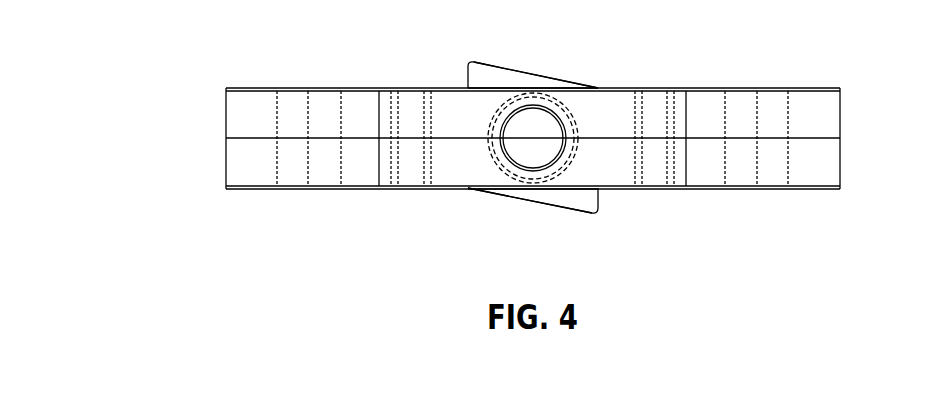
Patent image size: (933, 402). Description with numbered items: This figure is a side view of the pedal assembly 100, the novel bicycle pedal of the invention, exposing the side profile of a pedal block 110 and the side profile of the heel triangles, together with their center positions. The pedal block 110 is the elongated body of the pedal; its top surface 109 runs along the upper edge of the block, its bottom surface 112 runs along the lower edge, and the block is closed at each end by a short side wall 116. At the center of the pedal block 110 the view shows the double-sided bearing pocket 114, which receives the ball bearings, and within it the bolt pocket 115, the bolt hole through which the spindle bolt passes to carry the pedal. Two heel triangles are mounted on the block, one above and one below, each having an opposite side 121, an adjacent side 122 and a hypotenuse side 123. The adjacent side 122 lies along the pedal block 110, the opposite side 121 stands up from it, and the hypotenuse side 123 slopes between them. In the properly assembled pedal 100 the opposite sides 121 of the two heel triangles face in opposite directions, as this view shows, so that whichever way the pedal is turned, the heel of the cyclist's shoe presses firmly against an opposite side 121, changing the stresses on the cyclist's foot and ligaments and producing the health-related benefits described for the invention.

The pedal assembly 100 is at (200, 134).
The top surface 109 is at (262, 87).
The pedal block 110 is at (725, 84).
The bottom surface 112 is at (250, 138).
The bearing pocket 114 is at (485, 175).
The bolt pocket 115 is at (508, 162).
The short side wall 116 is at (225, 102).
The opposite side 121 is at (467, 73).
The adjacent side 122 is at (493, 90).
The hypotenuse side 123 is at (552, 73).